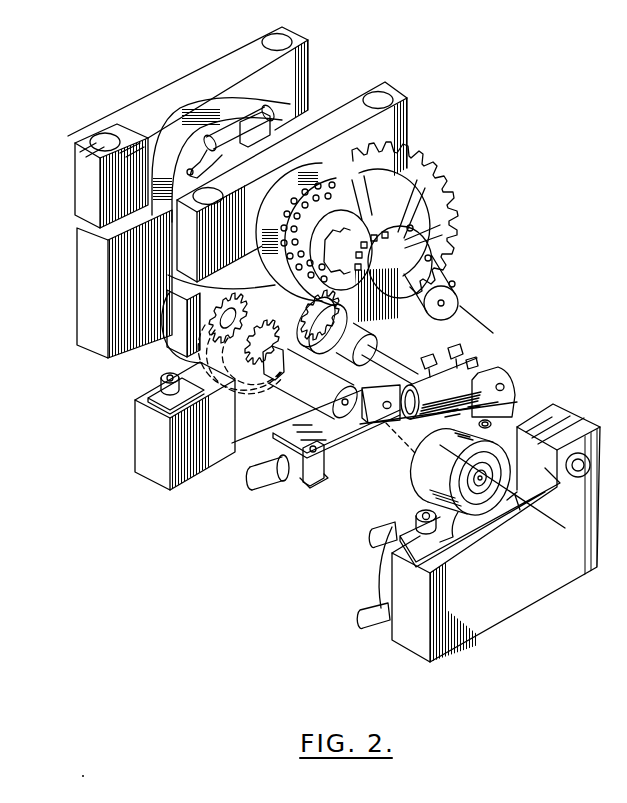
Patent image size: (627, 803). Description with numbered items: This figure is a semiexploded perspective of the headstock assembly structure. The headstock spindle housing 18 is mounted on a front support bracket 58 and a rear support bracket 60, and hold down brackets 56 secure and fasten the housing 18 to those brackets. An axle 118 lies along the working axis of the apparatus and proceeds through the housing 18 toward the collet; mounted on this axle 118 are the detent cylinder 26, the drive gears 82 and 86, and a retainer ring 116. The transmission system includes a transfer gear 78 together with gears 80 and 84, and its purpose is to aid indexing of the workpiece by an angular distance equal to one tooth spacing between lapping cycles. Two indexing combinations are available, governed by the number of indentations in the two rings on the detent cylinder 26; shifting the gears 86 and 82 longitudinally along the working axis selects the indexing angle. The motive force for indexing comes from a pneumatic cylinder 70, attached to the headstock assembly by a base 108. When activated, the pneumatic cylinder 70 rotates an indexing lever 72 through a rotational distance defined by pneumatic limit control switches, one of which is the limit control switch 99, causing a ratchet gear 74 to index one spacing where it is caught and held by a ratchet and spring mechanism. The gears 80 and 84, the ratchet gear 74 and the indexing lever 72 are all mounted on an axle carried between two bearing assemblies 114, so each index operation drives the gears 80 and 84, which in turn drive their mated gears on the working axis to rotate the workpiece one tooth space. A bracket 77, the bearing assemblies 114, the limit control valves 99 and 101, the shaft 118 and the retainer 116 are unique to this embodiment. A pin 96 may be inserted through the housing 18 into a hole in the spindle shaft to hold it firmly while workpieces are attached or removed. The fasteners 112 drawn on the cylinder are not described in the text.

The headstock spindle housing 18 is at (180, 116).
The detent cylinder 26 is at (290, 220).
The hold down brackets 56 is at (300, 30).
The front support bracket 58 is at (78, 258).
The rear support bracket 60 is at (245, 290).
The pneumatic cylinder 70 is at (480, 363).
The indexing lever 72 is at (277, 392).
The ratchet gear 74 is at (262, 366).
The bracket 77 is at (137, 448).
The transfer gear 78 is at (372, 318).
The gear 80 is at (207, 334).
The drive gear 82 is at (410, 228).
The gear 84 is at (173, 362).
The drive gear 86 is at (424, 153).
The pin 96 is at (233, 118).
The pneumatic limit control switch 99 is at (310, 462).
The limit control valve 101 is at (382, 573).
The base 108 is at (514, 377).
The fasteners 112 is at (450, 352).
The bearing assemblies 114 is at (163, 357).
The retainer ring 116 is at (415, 246).
The axle 118 is at (438, 270).